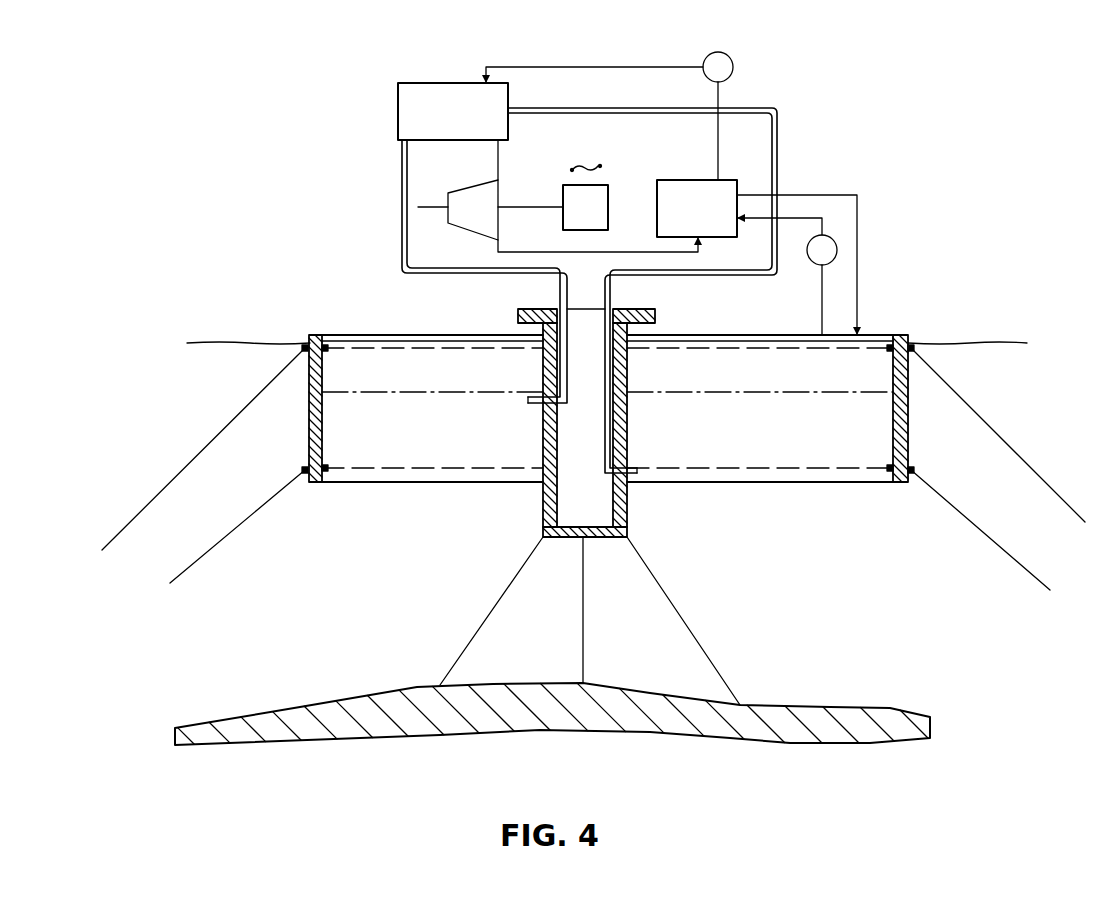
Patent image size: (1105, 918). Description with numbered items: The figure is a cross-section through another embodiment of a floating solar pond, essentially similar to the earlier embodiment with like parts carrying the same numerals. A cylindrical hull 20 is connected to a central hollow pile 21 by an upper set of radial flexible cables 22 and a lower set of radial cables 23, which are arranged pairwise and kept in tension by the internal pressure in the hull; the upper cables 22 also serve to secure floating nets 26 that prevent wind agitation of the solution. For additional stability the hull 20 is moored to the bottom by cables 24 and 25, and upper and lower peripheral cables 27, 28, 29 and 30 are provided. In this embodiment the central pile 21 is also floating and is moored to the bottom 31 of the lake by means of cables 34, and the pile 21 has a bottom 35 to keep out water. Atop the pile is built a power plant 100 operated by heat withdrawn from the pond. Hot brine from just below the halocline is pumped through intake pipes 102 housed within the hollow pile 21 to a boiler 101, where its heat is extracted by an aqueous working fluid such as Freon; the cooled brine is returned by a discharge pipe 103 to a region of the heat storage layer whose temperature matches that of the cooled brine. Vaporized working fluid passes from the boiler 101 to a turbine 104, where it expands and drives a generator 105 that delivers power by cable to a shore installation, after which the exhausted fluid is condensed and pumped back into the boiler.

The power plant 100 is at (829, 112).
The boiler 101 is at (398, 98).
The intake pipes 102 is at (566, 404).
The discharge pipe 103 is at (594, 458).
The turbine 104 is at (470, 235).
The generator 105 is at (602, 185).
The cylindrical hull 20 is at (908, 428).
The central hollow pile 21 is at (628, 423).
The upper set of radial flexible cables 22 is at (410, 347).
The lower set of radial cables 23 is at (485, 470).
The mooring cables 24 is at (160, 493).
The mooring cables 25 is at (210, 550).
The floating nets 26 is at (960, 520).
The upper peripheral cable 27 is at (305, 345).
The upper peripheral cable 28 is at (325, 345).
The lower peripheral cable 29 is at (328, 470).
The lower peripheral cable 30 is at (305, 470).
The bottom of the lake 31 is at (793, 705).
The cables 34 is at (485, 618).
The bottom 35 is at (587, 527).